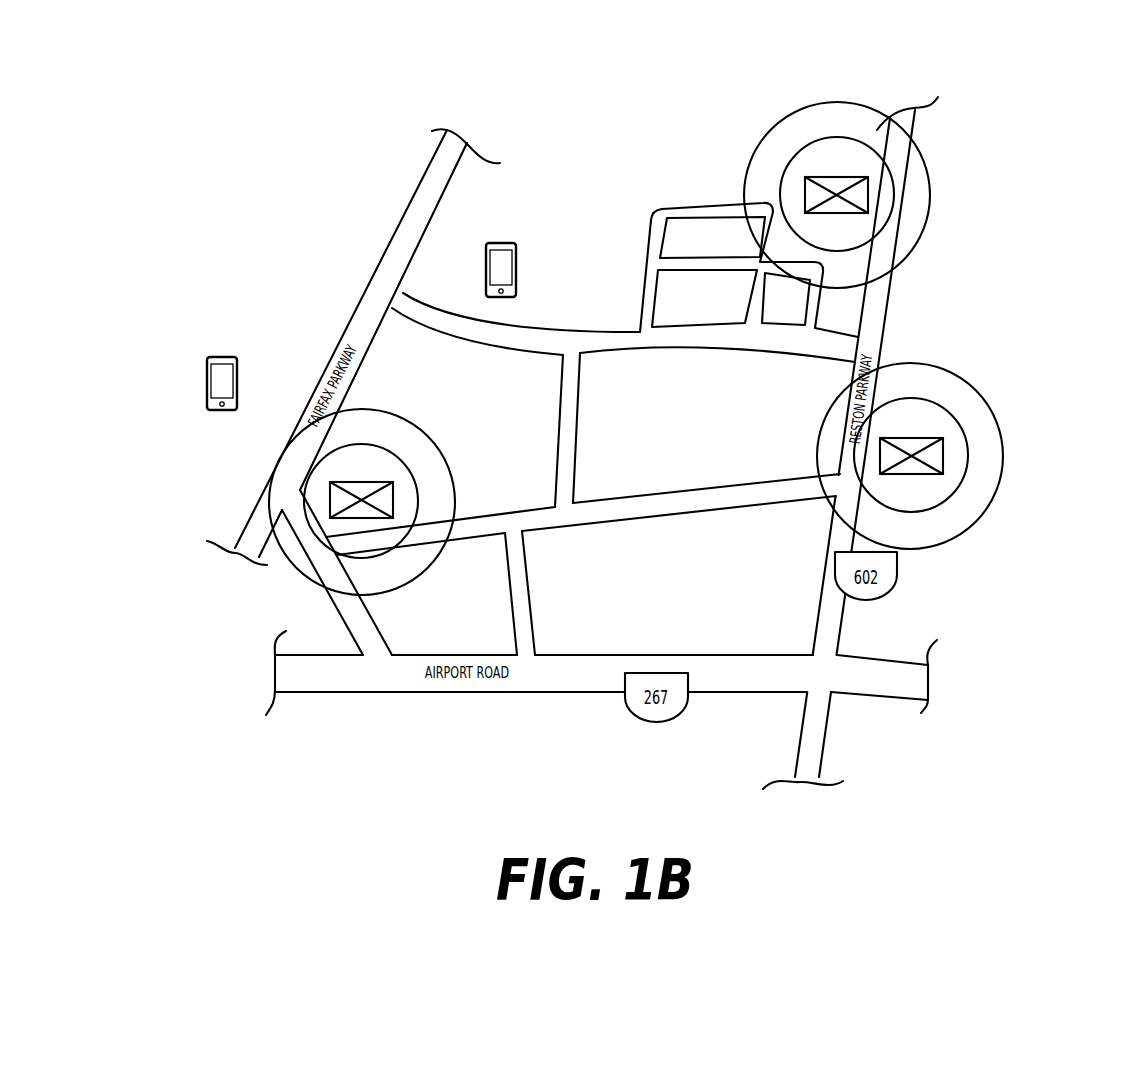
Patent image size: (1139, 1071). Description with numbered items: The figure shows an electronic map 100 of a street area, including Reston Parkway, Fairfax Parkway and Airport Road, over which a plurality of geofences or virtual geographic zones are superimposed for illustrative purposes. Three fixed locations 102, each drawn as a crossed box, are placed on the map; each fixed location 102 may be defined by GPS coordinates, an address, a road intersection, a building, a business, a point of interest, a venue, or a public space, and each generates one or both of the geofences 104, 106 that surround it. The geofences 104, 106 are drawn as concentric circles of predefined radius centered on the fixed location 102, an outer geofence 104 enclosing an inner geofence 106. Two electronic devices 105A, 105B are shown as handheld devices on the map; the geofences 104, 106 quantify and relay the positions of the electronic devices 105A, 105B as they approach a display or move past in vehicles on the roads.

The electronic map 100 is at (1036, 78).
The fixed location 102 is at (820, 177).
The geofence 104 is at (861, 102).
The geofence 106 is at (835, 137).
The electronic device 105A is at (225, 357).
The electronic device 105B is at (500, 243).